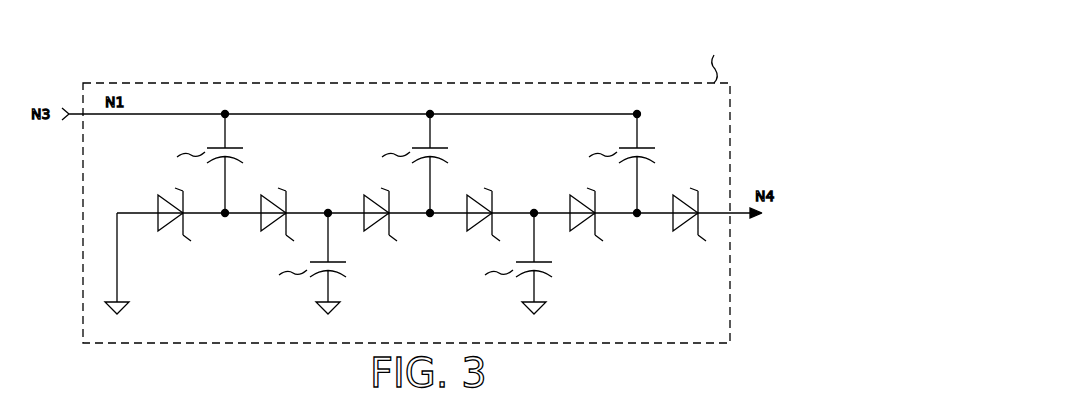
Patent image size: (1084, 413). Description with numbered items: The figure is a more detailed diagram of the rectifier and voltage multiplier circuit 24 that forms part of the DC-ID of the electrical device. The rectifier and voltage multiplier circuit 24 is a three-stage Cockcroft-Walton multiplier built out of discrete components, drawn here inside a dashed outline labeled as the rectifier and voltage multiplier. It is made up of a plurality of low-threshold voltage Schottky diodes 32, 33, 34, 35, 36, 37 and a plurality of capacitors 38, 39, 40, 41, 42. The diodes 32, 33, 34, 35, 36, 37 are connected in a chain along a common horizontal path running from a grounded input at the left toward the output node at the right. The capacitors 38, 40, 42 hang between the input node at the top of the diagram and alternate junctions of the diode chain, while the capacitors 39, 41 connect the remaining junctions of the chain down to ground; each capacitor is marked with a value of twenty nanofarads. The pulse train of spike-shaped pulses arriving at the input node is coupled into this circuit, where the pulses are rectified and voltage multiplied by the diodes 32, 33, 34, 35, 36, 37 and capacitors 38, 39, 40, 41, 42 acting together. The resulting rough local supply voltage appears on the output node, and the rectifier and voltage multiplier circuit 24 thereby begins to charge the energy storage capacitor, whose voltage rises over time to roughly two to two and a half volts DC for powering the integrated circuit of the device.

The rectifier and voltage multiplier circuit 24 is at (478, 84).
The low-threshold voltage Schottky diode 32 is at (178, 193).
The low-threshold voltage Schottky diode 33 is at (281, 193).
The low-threshold voltage Schottky diode 34 is at (384, 193).
The low-threshold voltage Schottky diode 35 is at (487, 193).
The low-threshold voltage Schottky diode 36 is at (590, 193).
The low-threshold voltage Schottky diode 37 is at (693, 193).
The capacitor 38 is at (244, 153).
The capacitor 39 is at (347, 269).
The capacitor 40 is at (449, 153).
The capacitor 41 is at (553, 269).
The capacitor 42 is at (656, 153).